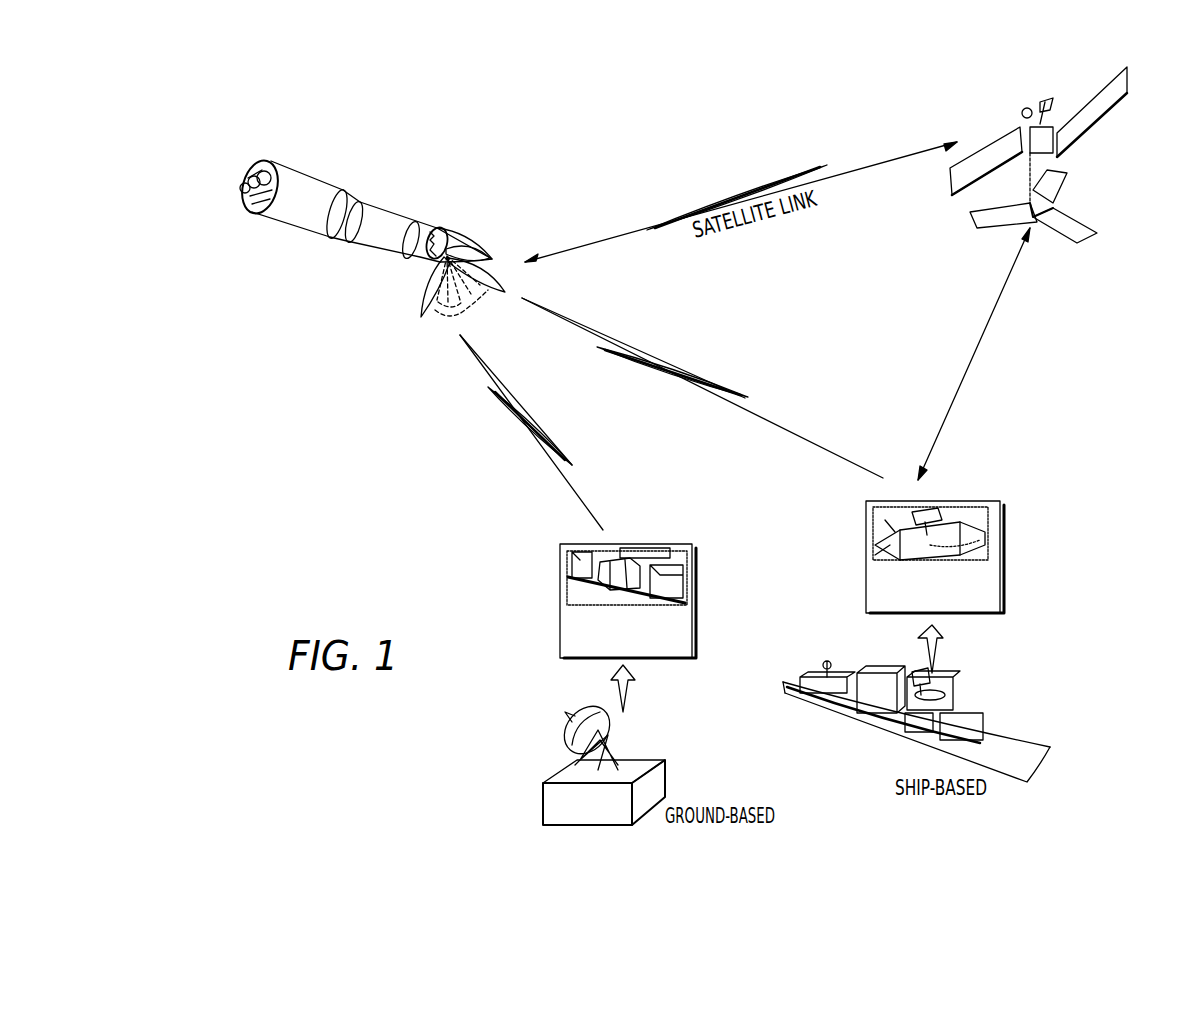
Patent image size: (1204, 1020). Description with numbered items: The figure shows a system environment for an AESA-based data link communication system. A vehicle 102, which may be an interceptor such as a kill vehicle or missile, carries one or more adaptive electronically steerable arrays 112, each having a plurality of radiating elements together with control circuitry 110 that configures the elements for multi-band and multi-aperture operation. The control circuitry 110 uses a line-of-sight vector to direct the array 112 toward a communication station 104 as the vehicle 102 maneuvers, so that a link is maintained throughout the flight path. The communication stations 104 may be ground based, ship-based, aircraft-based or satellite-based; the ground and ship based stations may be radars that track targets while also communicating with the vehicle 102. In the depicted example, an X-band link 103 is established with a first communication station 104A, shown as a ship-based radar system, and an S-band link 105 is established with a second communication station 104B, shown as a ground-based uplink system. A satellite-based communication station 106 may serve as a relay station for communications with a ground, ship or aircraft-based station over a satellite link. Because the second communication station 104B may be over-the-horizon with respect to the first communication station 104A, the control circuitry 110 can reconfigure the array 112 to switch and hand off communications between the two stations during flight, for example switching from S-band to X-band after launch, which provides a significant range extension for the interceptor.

The vehicle 102 is at (305, 185).
The X-band link 103 is at (692, 370).
The communication station 104 is at (697, 602).
The first communication station 104A is at (982, 577).
The second communication station 104B is at (577, 623).
The S-band link 105 is at (515, 408).
The satellite-based communication station 106 is at (1005, 145).
The control circuitry 110 is at (437, 226).
The adaptive electronically steerable array 112 is at (417, 226).